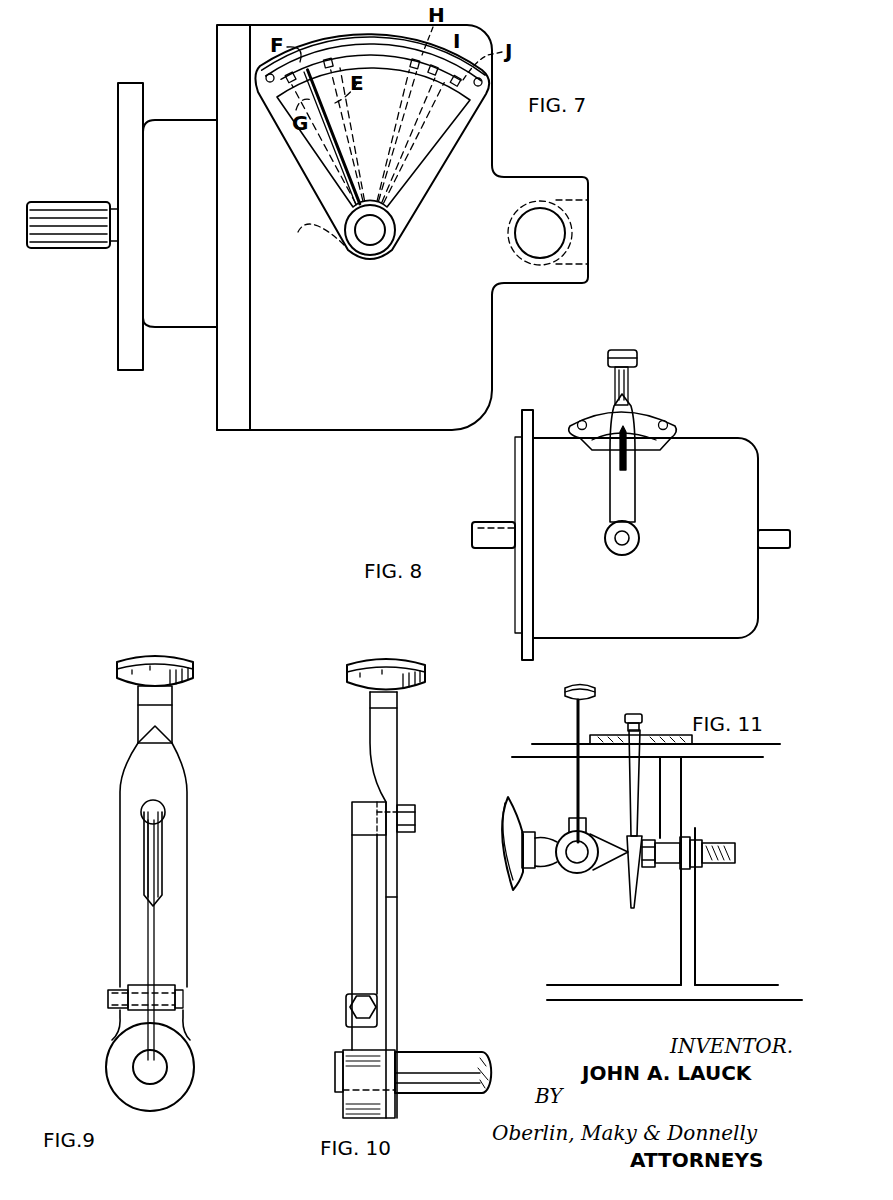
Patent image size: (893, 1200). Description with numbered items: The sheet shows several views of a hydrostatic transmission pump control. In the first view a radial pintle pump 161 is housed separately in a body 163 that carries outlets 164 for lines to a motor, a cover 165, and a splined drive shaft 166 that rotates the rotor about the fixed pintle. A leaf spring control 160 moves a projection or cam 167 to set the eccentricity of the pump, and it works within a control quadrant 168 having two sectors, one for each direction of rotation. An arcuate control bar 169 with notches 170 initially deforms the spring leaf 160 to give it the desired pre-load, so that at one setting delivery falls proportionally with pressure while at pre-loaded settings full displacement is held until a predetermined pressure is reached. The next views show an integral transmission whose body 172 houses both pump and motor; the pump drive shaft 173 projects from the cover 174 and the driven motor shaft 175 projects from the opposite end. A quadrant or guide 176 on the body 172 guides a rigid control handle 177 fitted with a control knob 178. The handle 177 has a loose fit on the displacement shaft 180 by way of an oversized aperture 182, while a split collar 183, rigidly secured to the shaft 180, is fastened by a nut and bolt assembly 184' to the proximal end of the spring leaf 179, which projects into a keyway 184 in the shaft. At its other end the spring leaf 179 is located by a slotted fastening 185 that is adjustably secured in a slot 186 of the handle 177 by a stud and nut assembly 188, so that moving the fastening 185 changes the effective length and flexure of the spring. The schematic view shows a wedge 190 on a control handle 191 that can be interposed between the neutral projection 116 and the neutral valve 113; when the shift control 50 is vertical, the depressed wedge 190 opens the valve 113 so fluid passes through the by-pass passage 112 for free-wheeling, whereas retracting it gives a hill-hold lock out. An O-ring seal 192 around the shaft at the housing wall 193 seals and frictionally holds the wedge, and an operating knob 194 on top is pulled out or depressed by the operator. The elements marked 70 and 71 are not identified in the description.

In FIG. 7, the leaf spring control 160 is at (343, 160).
In FIG. 7, the pump 161 is at (300, 432).
In FIG. 7, the pump body 163 is at (477, 349).
In FIG. 7, the outlets 164 is at (580, 238).
In FIG. 7, the cover 165 is at (218, 368).
In FIG. 7, the splined drive shaft 166 is at (80, 200).
In FIG. 7, the cam 167 is at (306, 252).
In FIG. 7, the control quadrant 168 is at (430, 196).
In FIG. 7, the arcuate control bar 169 is at (400, 48).
In FIG. 7, the notches 170 is at (348, 50).
In FIG. 8, the transmission body 172 is at (746, 624).
In FIG. 8, the drive shaft 173 is at (490, 548).
In FIG. 8, the cover 174 is at (518, 620).
In FIG. 8, the driven motor shaft 175 is at (778, 530).
In FIG. 8, the quadrant 176 is at (604, 418).
In FIG. 8, the control handle 177 is at (625, 400).
In FIG. 9, the control handle 177 is at (170, 725).
In FIG. 10, the control handle 177 is at (390, 734).
In FIG. 8, the control knob 178 is at (636, 350).
In FIG. 9, the control knob 178 is at (172, 658).
In FIG. 10, the control knob 178 is at (393, 662).
In FIG. 8, the spring leaf 179 is at (627, 490).
In FIG. 9, the spring leaf 179 is at (160, 940).
In FIG. 10, the spring leaf 179 is at (356, 940).
In FIG. 8, the shaft 180 is at (637, 534).
In FIG. 9, the shaft 180 is at (166, 1072).
In FIG. 10, the shaft 180 is at (447, 1060).
In FIG. 10, the oversized aperture 182 is at (398, 1050).
In FIG. 9, the split collar 183 is at (107, 1075).
In FIG. 9, the keyway 184 is at (170, 1015).
In FIG. 10, the keyway 184 is at (320, 1049).
In FIG. 10, the nut and bolt assembly 184' is at (398, 1004).
In FIG. 9, the slotted fastening 185 is at (170, 812).
In FIG. 10, the slotted fastening 185 is at (356, 822).
In FIG. 10, the slot 186 is at (394, 882).
In FIG. 10, the stud and nut assembly 188 is at (418, 814).
In FIG. 11, the shift control 50 is at (575, 777).
In FIG. 11, the panel 70 is at (730, 752).
In FIG. 11, the base 71 is at (748, 986).
In FIG. 11, the by-pass passage 112 is at (686, 936).
In FIG. 11, the neutral valve 113 is at (698, 841).
In FIG. 11, the neutral projection 116 is at (618, 858).
In FIG. 11, the wedge 190 is at (641, 860).
In FIG. 11, the wedge control handle 191 is at (628, 789).
In FIG. 11, the O-ring seal 192 is at (642, 722).
In FIG. 11, the housing wall 193 is at (670, 733).
In FIG. 11, the operating knob 194 is at (634, 713).